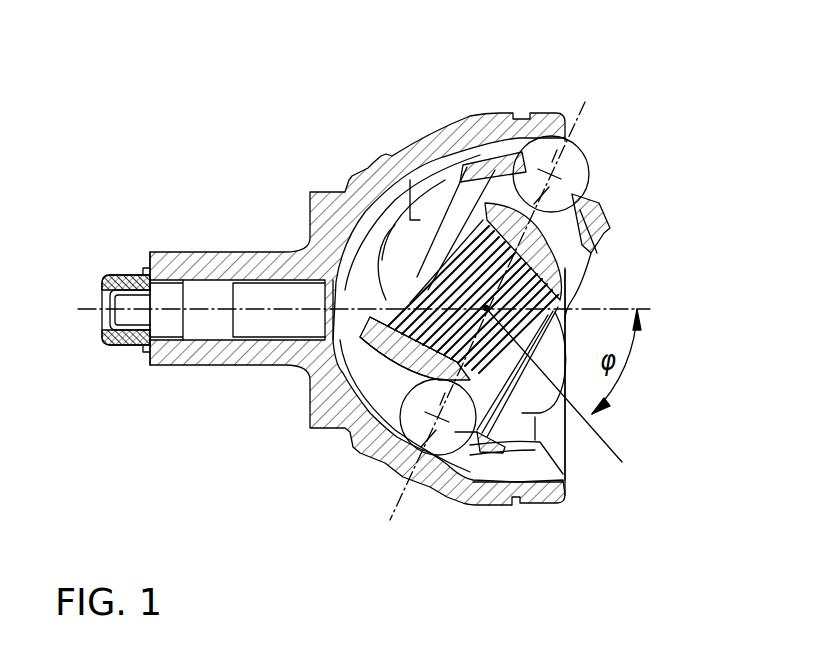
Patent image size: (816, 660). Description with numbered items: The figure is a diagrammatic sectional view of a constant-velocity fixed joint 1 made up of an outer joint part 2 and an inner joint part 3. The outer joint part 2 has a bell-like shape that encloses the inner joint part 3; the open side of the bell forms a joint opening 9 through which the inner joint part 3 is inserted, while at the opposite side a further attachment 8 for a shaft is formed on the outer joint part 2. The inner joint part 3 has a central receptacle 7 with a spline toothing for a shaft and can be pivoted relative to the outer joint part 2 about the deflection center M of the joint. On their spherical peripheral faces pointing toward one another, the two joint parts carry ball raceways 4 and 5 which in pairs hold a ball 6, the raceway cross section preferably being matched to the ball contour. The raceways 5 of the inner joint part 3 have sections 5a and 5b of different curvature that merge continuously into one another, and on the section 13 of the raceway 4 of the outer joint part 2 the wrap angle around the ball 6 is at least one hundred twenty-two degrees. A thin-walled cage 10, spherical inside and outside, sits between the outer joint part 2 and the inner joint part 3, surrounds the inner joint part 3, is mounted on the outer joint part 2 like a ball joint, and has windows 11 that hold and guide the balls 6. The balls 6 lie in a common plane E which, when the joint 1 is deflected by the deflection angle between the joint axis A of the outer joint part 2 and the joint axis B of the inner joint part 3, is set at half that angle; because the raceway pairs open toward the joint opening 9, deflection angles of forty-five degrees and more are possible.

The constant-velocity fixed joint 1 is at (245, 108).
The outer joint part 2 is at (460, 132).
The inner joint part 3 is at (513, 223).
The ball raceway of the outer joint part 4 is at (523, 467).
The ball raceway of the inner joint part 5 is at (425, 369).
The first raceway section 5a is at (405, 360).
The second raceway section 5b is at (385, 332).
The ball 6 is at (573, 160).
The central receptacle 7 is at (525, 307).
The attachment for a shaft 8 is at (184, 350).
The joint opening 9 is at (563, 453).
The cage 10 is at (483, 440).
The window 11 is at (465, 440).
The section of the raceway of the outer joint part 13 is at (422, 172).
The joint axis of the outer joint part A is at (78, 309).
The joint axis of the inner joint part B is at (607, 445).
The common plane of the balls E is at (585, 102).
The deflection center M is at (486, 308).